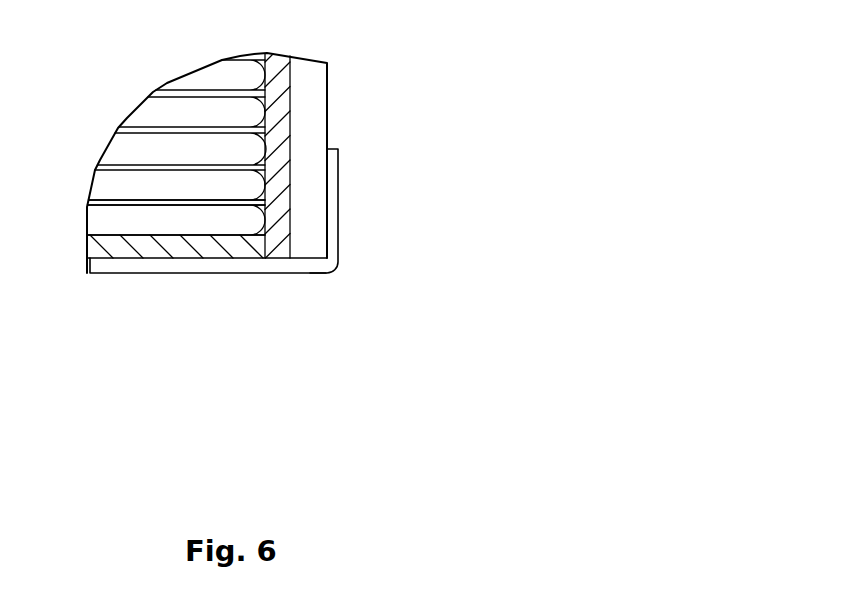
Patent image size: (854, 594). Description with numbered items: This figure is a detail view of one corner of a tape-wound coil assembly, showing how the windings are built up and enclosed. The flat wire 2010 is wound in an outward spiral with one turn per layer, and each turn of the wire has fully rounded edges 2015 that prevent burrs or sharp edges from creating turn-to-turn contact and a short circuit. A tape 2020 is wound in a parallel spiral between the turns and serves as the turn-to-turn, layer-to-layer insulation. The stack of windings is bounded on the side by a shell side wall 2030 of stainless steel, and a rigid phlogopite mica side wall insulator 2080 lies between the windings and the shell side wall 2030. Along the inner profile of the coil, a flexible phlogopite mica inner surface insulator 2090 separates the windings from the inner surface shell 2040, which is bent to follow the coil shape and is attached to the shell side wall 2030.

The shell side wall 2030 is at (339, 75).
The side wall insulator 2080 is at (303, 134).
The edges 2015 is at (278, 205).
The inner surface insulator 2090 is at (130, 275).
The flat wire 2010 is at (177, 249).
The tape 2020 is at (224, 217).
The inner surface shell 2040 is at (309, 285).